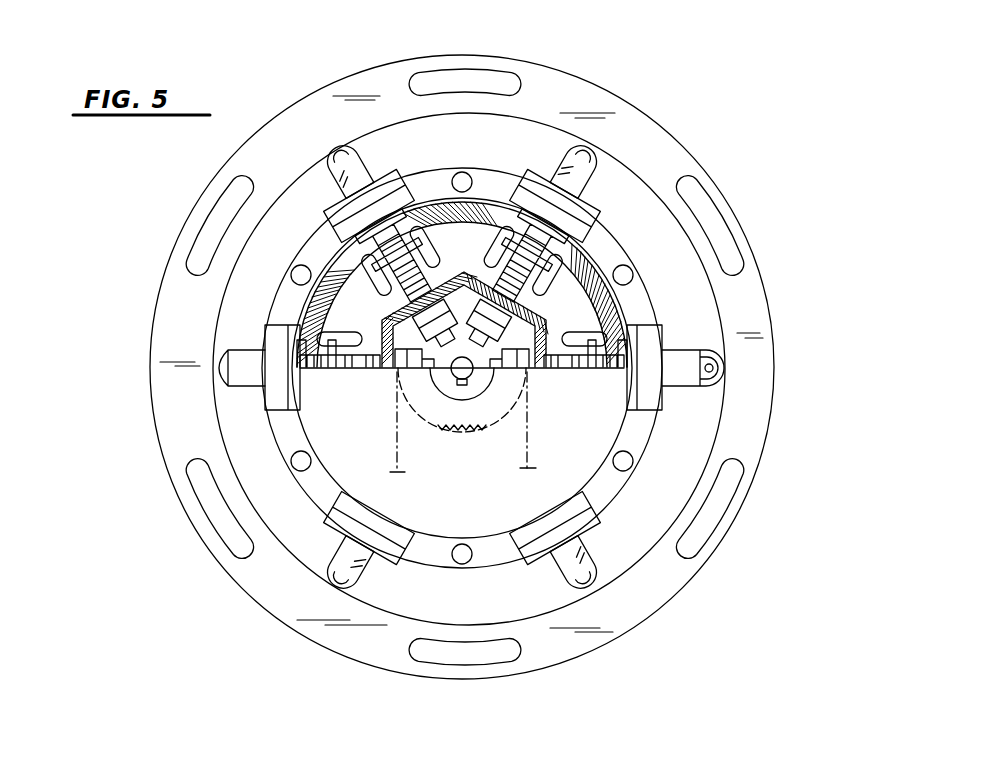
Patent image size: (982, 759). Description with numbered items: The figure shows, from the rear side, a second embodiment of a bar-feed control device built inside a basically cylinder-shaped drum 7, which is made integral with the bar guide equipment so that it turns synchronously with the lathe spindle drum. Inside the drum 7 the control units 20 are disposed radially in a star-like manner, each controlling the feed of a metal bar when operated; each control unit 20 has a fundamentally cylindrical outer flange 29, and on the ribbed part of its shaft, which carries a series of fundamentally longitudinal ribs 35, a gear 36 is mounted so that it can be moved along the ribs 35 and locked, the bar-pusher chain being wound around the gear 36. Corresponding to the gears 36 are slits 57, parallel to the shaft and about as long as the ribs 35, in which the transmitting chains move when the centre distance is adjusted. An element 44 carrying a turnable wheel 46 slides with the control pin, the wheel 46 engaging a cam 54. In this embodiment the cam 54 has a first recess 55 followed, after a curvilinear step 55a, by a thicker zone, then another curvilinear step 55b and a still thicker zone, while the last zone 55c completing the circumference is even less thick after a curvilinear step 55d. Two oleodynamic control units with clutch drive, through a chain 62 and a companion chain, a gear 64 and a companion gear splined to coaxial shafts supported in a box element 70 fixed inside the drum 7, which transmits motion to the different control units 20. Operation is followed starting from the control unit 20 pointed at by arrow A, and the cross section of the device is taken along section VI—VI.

The drum 7 is at (478, 582).
The control unit 20 is at (548, 150).
The outer flange 29 is at (392, 183).
The longitudinal ribs 35 is at (537, 262).
The gear 36 is at (605, 302).
The element 44 is at (693, 352).
The wheel 46 is at (345, 150).
The cam 54 is at (680, 160).
The first recess 55 is at (693, 260).
The curvilinear step 55a is at (717, 400).
The curvilinear step 55b is at (300, 572).
The last zone 55c is at (287, 183).
The curvilinear step 55d is at (217, 340).
The slits 57 is at (368, 272).
The chain 62 is at (400, 455).
The gear 64 is at (478, 432).
The box element 70 is at (467, 280).
The arrow A is at (585, 132).
The section VI— VI is at (638, 74).